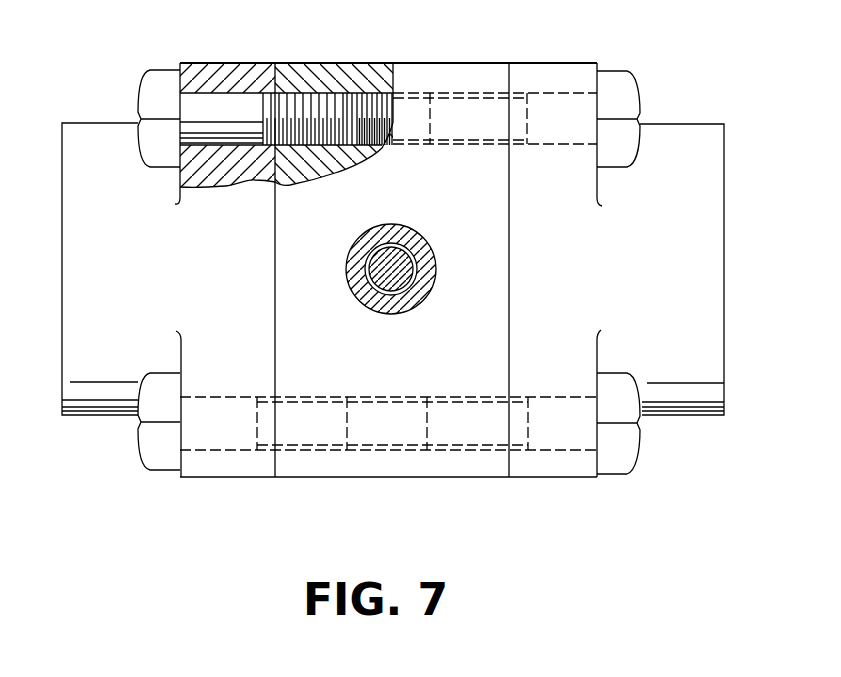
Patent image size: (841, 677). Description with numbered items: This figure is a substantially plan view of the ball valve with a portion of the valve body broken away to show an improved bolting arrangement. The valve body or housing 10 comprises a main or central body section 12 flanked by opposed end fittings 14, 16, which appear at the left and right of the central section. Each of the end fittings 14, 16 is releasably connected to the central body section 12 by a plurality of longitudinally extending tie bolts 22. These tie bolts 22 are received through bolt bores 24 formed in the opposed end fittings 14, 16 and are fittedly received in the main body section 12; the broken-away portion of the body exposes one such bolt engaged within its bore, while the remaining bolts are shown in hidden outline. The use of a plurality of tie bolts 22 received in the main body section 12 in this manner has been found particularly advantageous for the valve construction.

The body 10 is at (681, 88).
The main body section 12 is at (422, 83).
The end fitting 14 is at (108, 143).
The end fitting 16 is at (697, 152).
The tie bolts 22 is at (165, 83).
The bolt bores 24 is at (214, 92).